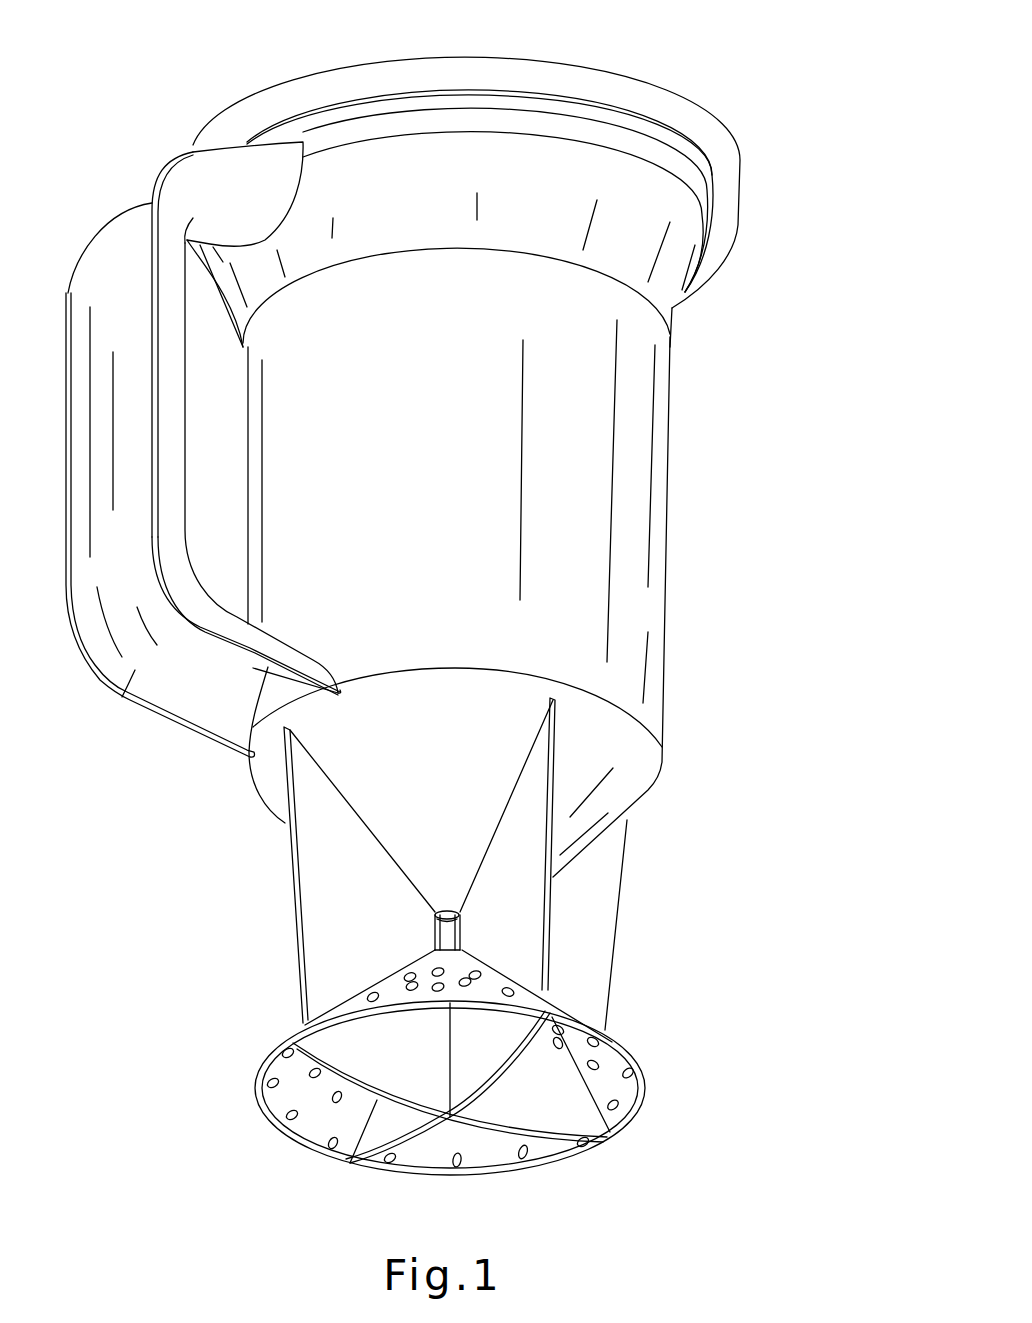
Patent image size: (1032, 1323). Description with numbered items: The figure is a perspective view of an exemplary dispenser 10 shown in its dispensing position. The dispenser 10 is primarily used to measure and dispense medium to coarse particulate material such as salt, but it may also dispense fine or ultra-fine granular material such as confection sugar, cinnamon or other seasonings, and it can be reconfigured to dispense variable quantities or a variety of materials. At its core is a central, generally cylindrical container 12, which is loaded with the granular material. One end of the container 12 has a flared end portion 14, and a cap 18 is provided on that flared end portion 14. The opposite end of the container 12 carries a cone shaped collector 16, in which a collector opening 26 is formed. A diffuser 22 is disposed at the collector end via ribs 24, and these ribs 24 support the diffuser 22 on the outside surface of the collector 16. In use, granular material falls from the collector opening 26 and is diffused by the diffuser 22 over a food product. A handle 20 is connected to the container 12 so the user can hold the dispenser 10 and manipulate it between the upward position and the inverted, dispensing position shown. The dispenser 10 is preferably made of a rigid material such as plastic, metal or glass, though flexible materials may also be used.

The dispenser 10 is at (750, 517).
The container 12 is at (637, 613).
The flared end portion 14 is at (672, 302).
The cone shaped collector 16 is at (640, 783).
The cap 18 is at (660, 115).
The handle 20 is at (135, 672).
The diffuser 22 is at (633, 1048).
The ribs 24 is at (590, 928).
The collector opening 26 is at (437, 927).